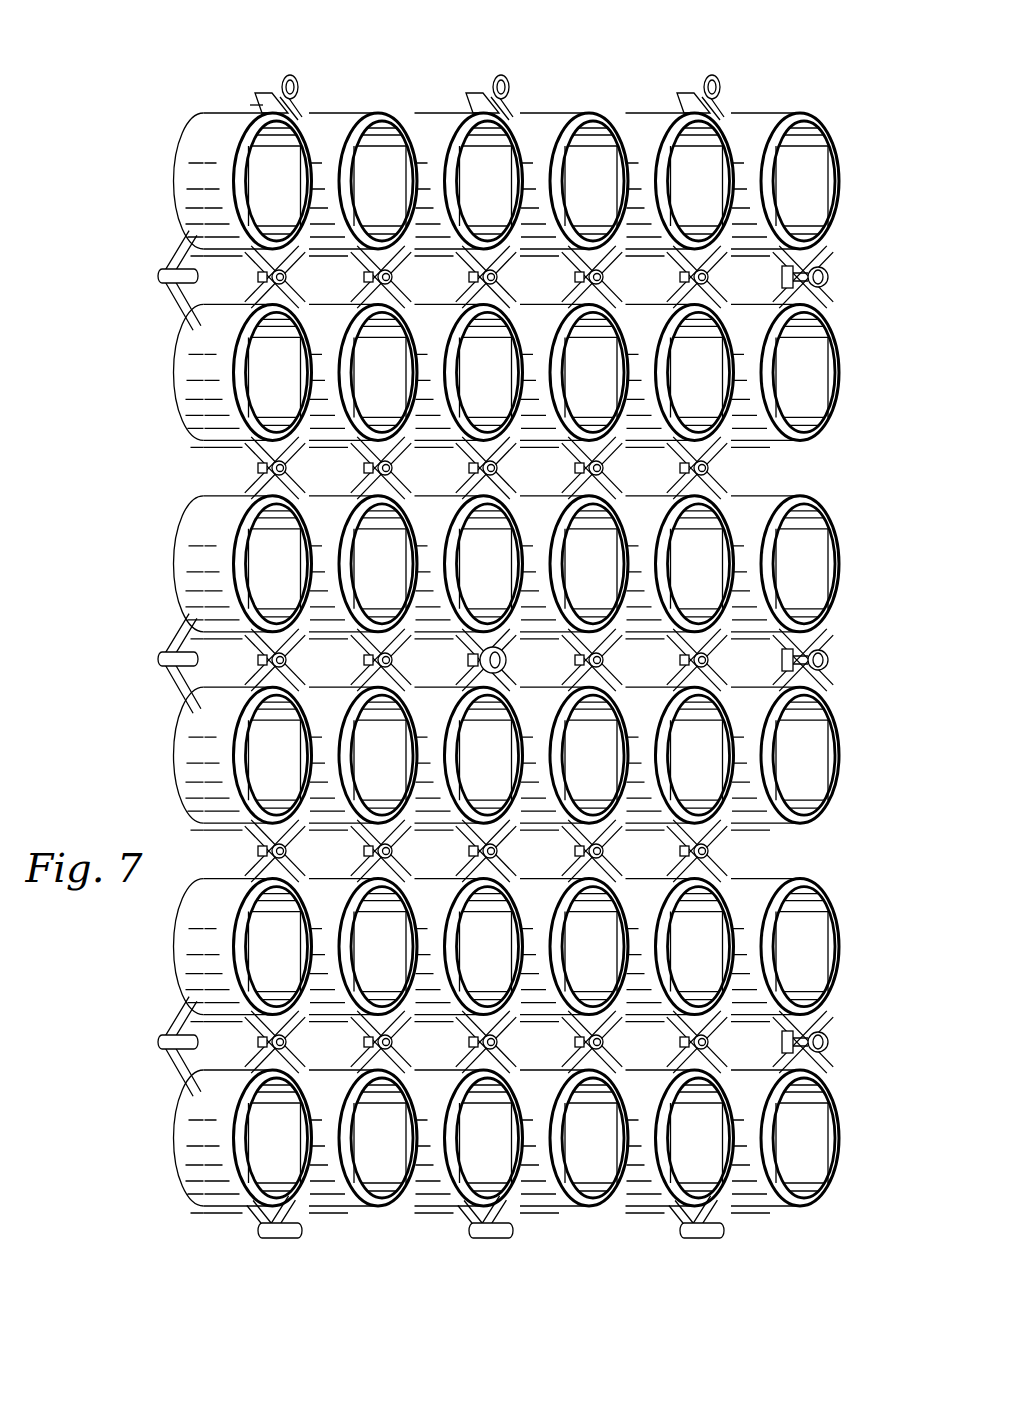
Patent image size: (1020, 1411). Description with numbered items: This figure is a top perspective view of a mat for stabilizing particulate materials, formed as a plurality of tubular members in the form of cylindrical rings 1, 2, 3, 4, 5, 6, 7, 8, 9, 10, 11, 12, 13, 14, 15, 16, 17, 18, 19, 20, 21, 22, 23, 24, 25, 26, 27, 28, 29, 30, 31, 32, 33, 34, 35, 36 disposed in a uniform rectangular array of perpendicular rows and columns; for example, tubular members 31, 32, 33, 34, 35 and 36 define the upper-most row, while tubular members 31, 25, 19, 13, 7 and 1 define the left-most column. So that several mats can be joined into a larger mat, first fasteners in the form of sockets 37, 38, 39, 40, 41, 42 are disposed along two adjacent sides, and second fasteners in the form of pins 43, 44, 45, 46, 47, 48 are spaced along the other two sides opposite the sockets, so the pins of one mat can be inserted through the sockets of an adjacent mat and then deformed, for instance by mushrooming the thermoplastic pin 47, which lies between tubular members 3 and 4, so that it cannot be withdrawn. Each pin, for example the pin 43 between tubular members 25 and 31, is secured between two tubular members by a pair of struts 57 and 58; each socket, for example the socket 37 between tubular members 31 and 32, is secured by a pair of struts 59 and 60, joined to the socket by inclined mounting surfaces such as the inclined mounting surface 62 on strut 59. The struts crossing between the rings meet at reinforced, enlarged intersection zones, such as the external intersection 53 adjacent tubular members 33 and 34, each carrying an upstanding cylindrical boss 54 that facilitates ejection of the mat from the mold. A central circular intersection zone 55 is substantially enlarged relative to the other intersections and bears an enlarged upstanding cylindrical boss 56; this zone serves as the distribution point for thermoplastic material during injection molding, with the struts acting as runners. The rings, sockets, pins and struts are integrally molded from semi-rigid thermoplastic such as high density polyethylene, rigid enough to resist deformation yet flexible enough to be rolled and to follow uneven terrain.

The tubular member 1 is at (212, 1212).
The tubular member 2 is at (316, 1212).
The tubular member 3 is at (421, 1212).
The tubular member 4 is at (526, 1212).
The tubular member 5 is at (631, 1212).
The tubular member 6 is at (740, 1212).
The tubular member 7 is at (176, 945).
The tubular member 8 is at (312, 1024).
The tubular member 9 is at (417, 1024).
The tubular member 10 is at (520, 1024).
The tubular member 11 is at (627, 1024).
The tubular member 12 is at (734, 1024).
The tubular member 13 is at (176, 752).
The tubular member 14 is at (312, 832).
The tubular member 15 is at (417, 832).
The tubular member 16 is at (520, 832).
The tubular member 17 is at (627, 832).
The tubular member 18 is at (734, 832).
The tubular member 19 is at (176, 562).
The tubular member 20 is at (312, 642).
The tubular member 21 is at (452, 568).
The tubular member 22 is at (558, 568).
The tubular member 23 is at (627, 642).
The tubular member 24 is at (734, 642).
The tubular member 25 is at (176, 372).
The tubular member 26 is at (312, 450).
The tubular member 27 is at (417, 450).
The tubular member 28 is at (520, 450).
The tubular member 29 is at (627, 450).
The tubular member 30 is at (734, 450).
The tubular member 31 is at (176, 178).
The tubular member 32 is at (386, 116).
The tubular member 33 is at (462, 116).
The tubular member 34 is at (588, 116).
The tubular member 35 is at (668, 116).
The tubular member 36 is at (792, 116).
The socket 37 is at (273, 65).
The socket 38 is at (504, 78).
The socket 39 is at (713, 78).
The socket 40 is at (829, 282).
The socket 41 is at (830, 663).
The socket 42 is at (830, 1045).
The pin 43 is at (143, 270).
The pin 44 is at (165, 650).
The pin 45 is at (165, 1033).
The pin 46 is at (280, 1243).
The pin 47 is at (490, 1243).
The pin 48 is at (703, 1243).
The external strut intersection 53 is at (474, 282).
The upstanding cylindrical boss 54 is at (500, 281).
The central circular intersection zone 55 is at (474, 664).
The enlarged upstanding cylindrical boss 56 is at (508, 664).
The strut 57 is at (170, 322).
The strut 58 is at (172, 236).
The strut 59 is at (253, 100).
The strut 60 is at (320, 110).
The inclined mounting surface 62 is at (262, 92).